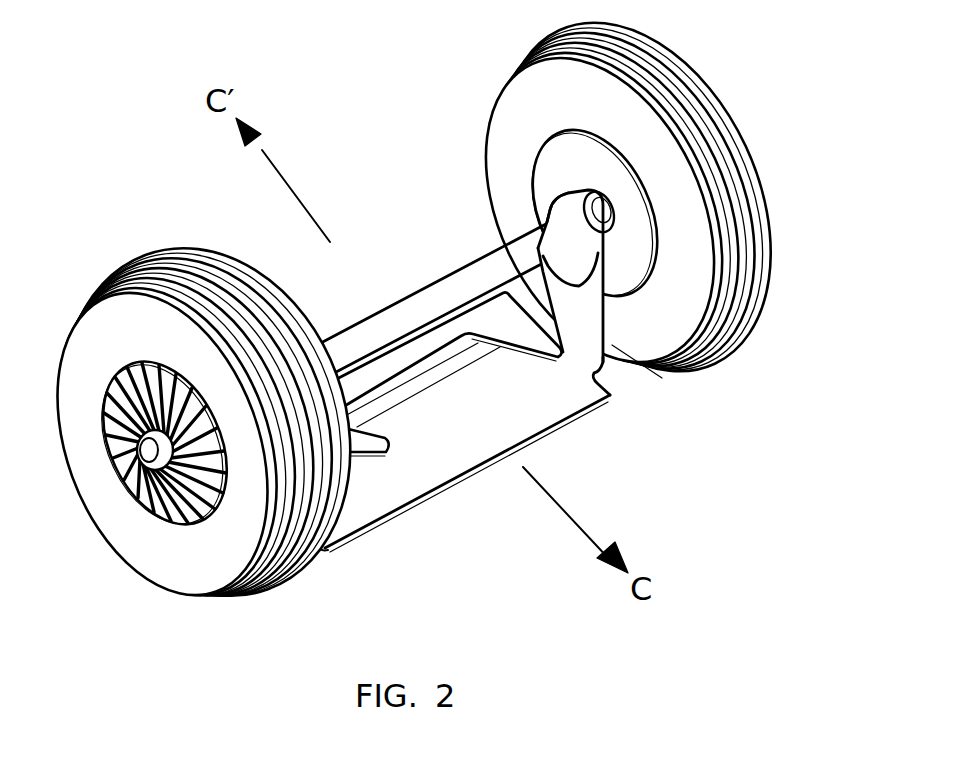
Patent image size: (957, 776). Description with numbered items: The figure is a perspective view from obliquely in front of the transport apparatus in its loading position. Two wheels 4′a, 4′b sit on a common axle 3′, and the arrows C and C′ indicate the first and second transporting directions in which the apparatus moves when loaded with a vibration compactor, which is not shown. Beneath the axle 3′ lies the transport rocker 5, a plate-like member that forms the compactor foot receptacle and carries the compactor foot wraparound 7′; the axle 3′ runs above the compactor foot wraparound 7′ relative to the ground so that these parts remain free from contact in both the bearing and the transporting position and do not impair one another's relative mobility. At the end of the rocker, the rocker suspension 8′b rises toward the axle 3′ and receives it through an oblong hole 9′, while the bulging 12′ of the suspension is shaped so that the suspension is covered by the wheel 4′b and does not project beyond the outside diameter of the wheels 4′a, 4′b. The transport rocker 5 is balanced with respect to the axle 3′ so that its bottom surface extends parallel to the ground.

The wheel 4′a is at (93, 343).
The wheel 4′b is at (532, 84).
The axle 3′ is at (360, 337).
The transport rocker 5 is at (417, 453).
The compactor foot wraparound 7′ is at (603, 403).
The rocker suspension 8′b is at (587, 323).
The oblong holes 9′ is at (545, 237).
The bulging 12′ is at (613, 297).